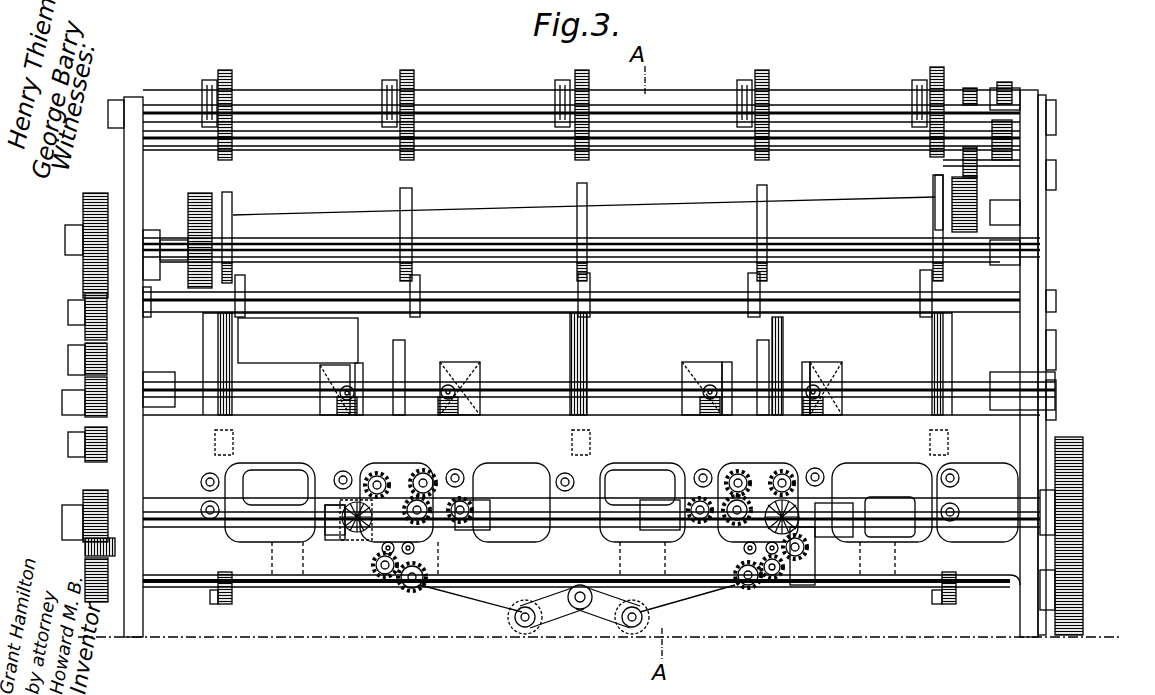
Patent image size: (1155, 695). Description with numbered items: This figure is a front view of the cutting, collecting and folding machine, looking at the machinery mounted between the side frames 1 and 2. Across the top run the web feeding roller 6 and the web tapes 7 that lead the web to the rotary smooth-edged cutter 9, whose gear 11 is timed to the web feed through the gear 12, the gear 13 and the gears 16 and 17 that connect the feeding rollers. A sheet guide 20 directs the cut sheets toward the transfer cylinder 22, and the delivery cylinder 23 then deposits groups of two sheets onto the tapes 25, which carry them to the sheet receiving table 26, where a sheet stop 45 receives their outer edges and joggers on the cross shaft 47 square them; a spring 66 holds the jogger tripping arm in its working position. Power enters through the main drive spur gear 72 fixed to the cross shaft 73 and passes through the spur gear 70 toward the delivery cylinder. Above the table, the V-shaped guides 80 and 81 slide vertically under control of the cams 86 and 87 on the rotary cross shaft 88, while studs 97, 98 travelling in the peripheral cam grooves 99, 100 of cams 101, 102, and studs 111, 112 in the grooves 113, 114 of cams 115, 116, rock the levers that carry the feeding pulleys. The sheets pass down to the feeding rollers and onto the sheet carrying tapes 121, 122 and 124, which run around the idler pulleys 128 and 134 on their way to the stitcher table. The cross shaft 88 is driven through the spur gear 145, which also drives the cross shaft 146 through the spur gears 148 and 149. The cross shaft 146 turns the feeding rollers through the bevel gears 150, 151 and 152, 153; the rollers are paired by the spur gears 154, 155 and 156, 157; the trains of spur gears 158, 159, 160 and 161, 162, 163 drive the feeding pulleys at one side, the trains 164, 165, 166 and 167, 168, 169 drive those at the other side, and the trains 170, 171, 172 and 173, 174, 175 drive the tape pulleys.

The side frame 1 is at (136, 112).
The side frame 2 is at (1030, 112).
The web feeding roller 6 is at (600, 633).
The web tapes 7 is at (233, 100).
The rotary smooth-edged cutter 9 is at (591, 229).
The gear 11 is at (955, 195).
The gear 12 is at (963, 165).
The gear 13 is at (968, 84).
The gear 16 is at (1009, 83).
The gear 17 is at (1012, 150).
The sheet guide 20 is at (578, 290).
The transfer cylinder 22 is at (602, 310).
The delivery cylinder 23 is at (591, 364).
The tapes 25 is at (222, 585).
The sheet receiving table 26 is at (591, 488).
The sheet stop 45 is at (581, 483).
The cross shaft 47 is at (285, 587).
The spring 66 is at (112, 550).
The spur gear 70 is at (1068, 440).
The main drive spur gear 72 is at (85, 300).
The cross shaft 73 is at (108, 188).
The V-shaped guide 80 is at (411, 377).
The V-shaped guide 81 is at (753, 377).
The cam 86 is at (372, 333).
The cam 87 is at (790, 352).
The rotary cross shaft 88 is at (600, 392).
The stud 97 is at (340, 393).
The stud 98 is at (457, 390).
The peripheral cam groove 99 is at (357, 365).
The peripheral cam groove 100 is at (452, 385).
The cam 101 is at (338, 365).
The cam 102 is at (462, 375).
The stud 111 is at (703, 390).
The stud 112 is at (832, 372).
The peripheral cam groove 113 is at (727, 365).
The peripheral cam groove 114 is at (815, 380).
The cam 115 is at (700, 380).
The cam 116 is at (842, 375).
The sheet carrying tapes 121 is at (500, 610).
The sheet carrying tapes 122 is at (378, 603).
The sheet carrying tapes 124 is at (665, 598).
The idler pulleys 128 is at (525, 627).
The intermediate idler pulleys 134 is at (632, 627).
The spur gear 145 is at (95, 362).
The cross shaft 146 is at (172, 512).
The spur gear 148 is at (95, 450).
The spur gear 149 is at (92, 518).
The bevel gear 150 is at (340, 540).
The bevel gear 151 is at (372, 545).
The bevel gear 152 is at (825, 537).
The bevel gear 153 is at (807, 552).
The spur gear 154 is at (420, 470).
The spur gear 155 is at (438, 533).
The spur gear 156 is at (755, 470).
The spur gear 157 is at (735, 530).
The spur gear 158 is at (275, 480).
The spur gear 159 is at (340, 471).
The spur gear 160 is at (377, 473).
The spur gear 161 is at (478, 530).
The spur gear 162 is at (470, 480).
The spur gear 163 is at (455, 469).
The spur gear 164 is at (695, 530).
The spur gear 165 is at (655, 480).
The spur gear 166 is at (735, 472).
The spur gear 167 is at (864, 485).
The spur gear 168 is at (843, 508).
The spur gear 169 is at (790, 472).
The spur gear 170 is at (392, 556).
The spur gear 171 is at (388, 577).
The spur gear 172 is at (458, 630).
The spur gear 173 is at (792, 637).
The spur gear 174 is at (772, 580).
The spur gear 175 is at (782, 573).